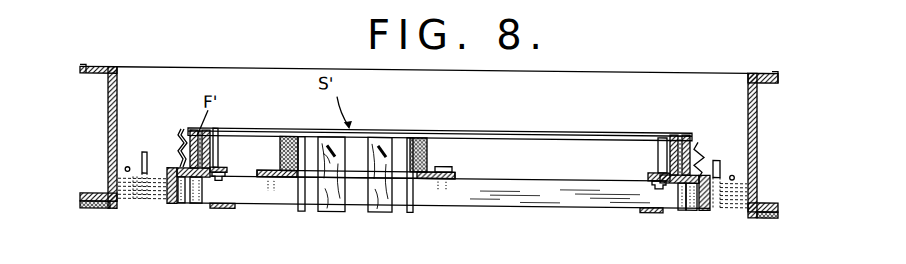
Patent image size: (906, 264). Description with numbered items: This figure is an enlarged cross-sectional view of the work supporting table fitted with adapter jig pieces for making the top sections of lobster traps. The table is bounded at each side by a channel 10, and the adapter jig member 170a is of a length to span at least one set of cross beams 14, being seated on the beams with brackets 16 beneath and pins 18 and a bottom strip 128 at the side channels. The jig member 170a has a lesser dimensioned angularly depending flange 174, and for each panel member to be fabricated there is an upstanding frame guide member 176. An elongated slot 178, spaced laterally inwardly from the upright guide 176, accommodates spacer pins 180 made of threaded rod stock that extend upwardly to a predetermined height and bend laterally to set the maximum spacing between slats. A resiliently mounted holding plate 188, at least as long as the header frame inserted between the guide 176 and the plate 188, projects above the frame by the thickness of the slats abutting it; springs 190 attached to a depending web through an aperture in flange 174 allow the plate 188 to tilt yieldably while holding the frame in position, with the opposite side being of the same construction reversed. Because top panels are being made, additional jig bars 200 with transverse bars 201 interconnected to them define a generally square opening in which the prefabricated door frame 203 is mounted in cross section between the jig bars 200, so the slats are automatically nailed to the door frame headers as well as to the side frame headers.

The side frame channel 10 is at (110, 112).
The cross beams 14 is at (465, 195).
The bracket 16 is at (219, 202).
The pin 18 is at (141, 158).
The bottom pad strip 128 is at (82, 206).
The adapter jig member 170a is at (173, 166).
The angularly depending flange 174 is at (172, 200).
The upstanding frame guide member 176 is at (215, 139).
The elongated slot 178 is at (232, 166).
The spacer pins 180 is at (231, 145).
The holding plate 188 is at (185, 126).
The springs 190 is at (182, 135).
The jig bars 200 is at (262, 175).
The transverse bars 201 is at (352, 169).
The prefabricated lobster trap door frame 203 is at (368, 207).